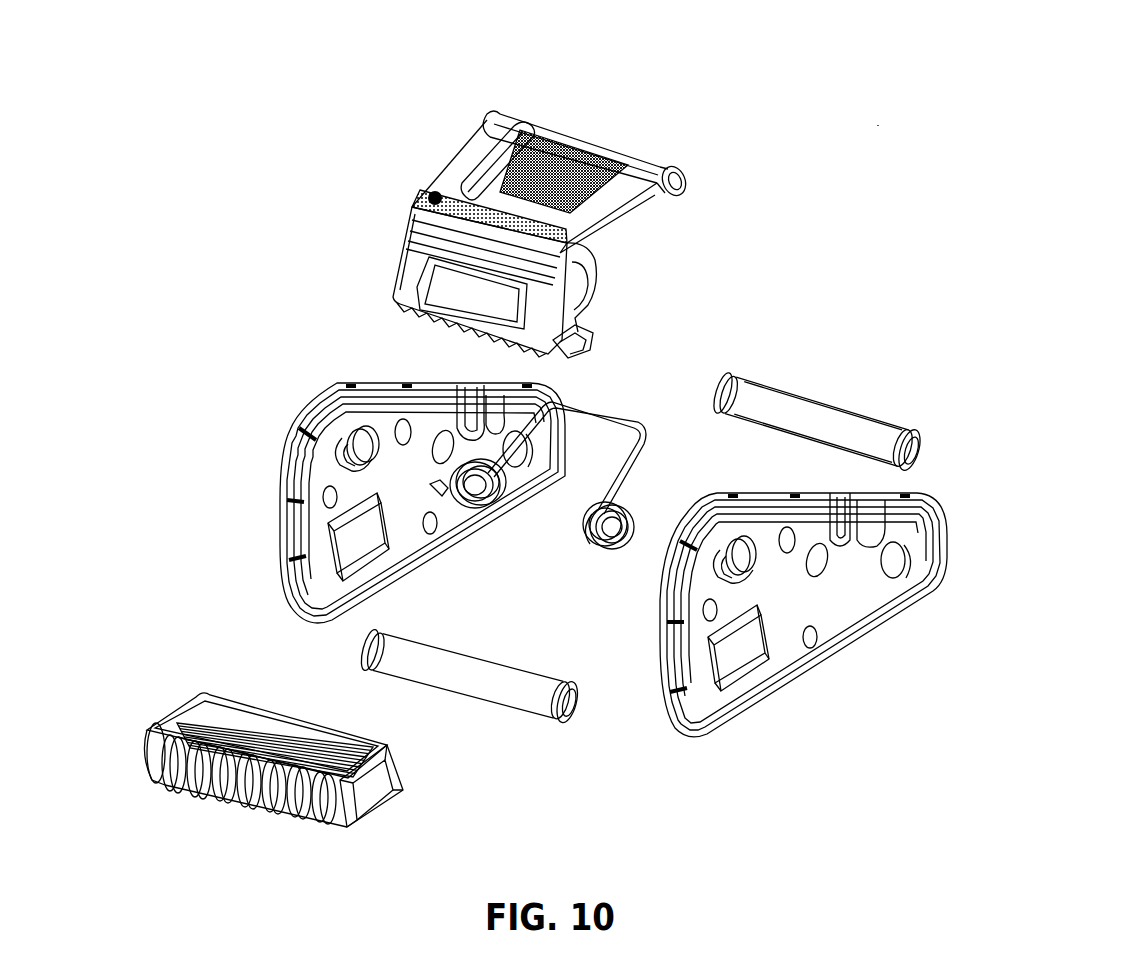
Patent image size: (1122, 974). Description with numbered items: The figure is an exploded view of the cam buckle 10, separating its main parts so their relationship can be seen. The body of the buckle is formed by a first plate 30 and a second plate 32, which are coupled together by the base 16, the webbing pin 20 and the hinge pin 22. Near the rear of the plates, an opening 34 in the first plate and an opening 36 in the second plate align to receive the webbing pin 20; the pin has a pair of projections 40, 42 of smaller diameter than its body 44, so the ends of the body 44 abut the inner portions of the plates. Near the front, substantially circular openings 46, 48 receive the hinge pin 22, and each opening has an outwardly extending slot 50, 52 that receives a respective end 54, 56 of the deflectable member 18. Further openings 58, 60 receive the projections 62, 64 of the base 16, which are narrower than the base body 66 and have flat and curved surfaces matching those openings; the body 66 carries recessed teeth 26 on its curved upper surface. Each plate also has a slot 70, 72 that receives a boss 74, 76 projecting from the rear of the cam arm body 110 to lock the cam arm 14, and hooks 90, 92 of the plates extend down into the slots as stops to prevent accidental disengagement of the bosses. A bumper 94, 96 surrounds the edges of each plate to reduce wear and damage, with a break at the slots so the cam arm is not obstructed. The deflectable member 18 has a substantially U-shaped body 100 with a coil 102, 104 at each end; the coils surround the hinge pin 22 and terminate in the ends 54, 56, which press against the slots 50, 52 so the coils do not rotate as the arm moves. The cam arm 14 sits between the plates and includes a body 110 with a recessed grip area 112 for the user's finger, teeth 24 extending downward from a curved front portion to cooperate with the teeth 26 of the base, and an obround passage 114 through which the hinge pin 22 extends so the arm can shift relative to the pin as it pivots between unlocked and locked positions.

The cam buckle 10 is at (878, 125).
The cam arm 14 is at (378, 162).
The base 16 is at (135, 730).
The deflectable member 18 is at (648, 462).
The webbing pin 20 is at (890, 410).
The hinge pin 22 is at (505, 700).
The teeth 24 is at (583, 345).
The teeth 26 is at (200, 722).
The first plate 30 is at (893, 633).
The second plate 32 is at (280, 462).
The opening 34 is at (900, 562).
The opening 36 is at (517, 457).
The projection 40 is at (906, 449).
The projection 42 is at (725, 394).
The body 44 is at (818, 422).
The opening 46 is at (736, 560).
The opening 48 is at (362, 447).
The slot 50 is at (720, 563).
The slot 52 is at (337, 458).
The end 54 is at (605, 535).
The end 56 is at (440, 490).
The opening 58 is at (730, 672).
The opening 60 is at (337, 550).
The projection 62 is at (345, 823).
The projection 64 is at (150, 740).
The body 66 is at (290, 715).
The slot 70 is at (835, 503).
The slot 72 is at (455, 398).
The boss 74 is at (690, 178).
The boss 76 is at (487, 118).
The hook 90 is at (832, 545).
The hook 92 is at (448, 432).
The bumper 94 is at (832, 652).
The bumper 96 is at (287, 510).
The body 100 is at (605, 420).
The coil 102 is at (628, 513).
The coil 104 is at (478, 505).
The body 110 is at (612, 208).
The grip area 112 is at (570, 155).
The passage 114 is at (572, 277).